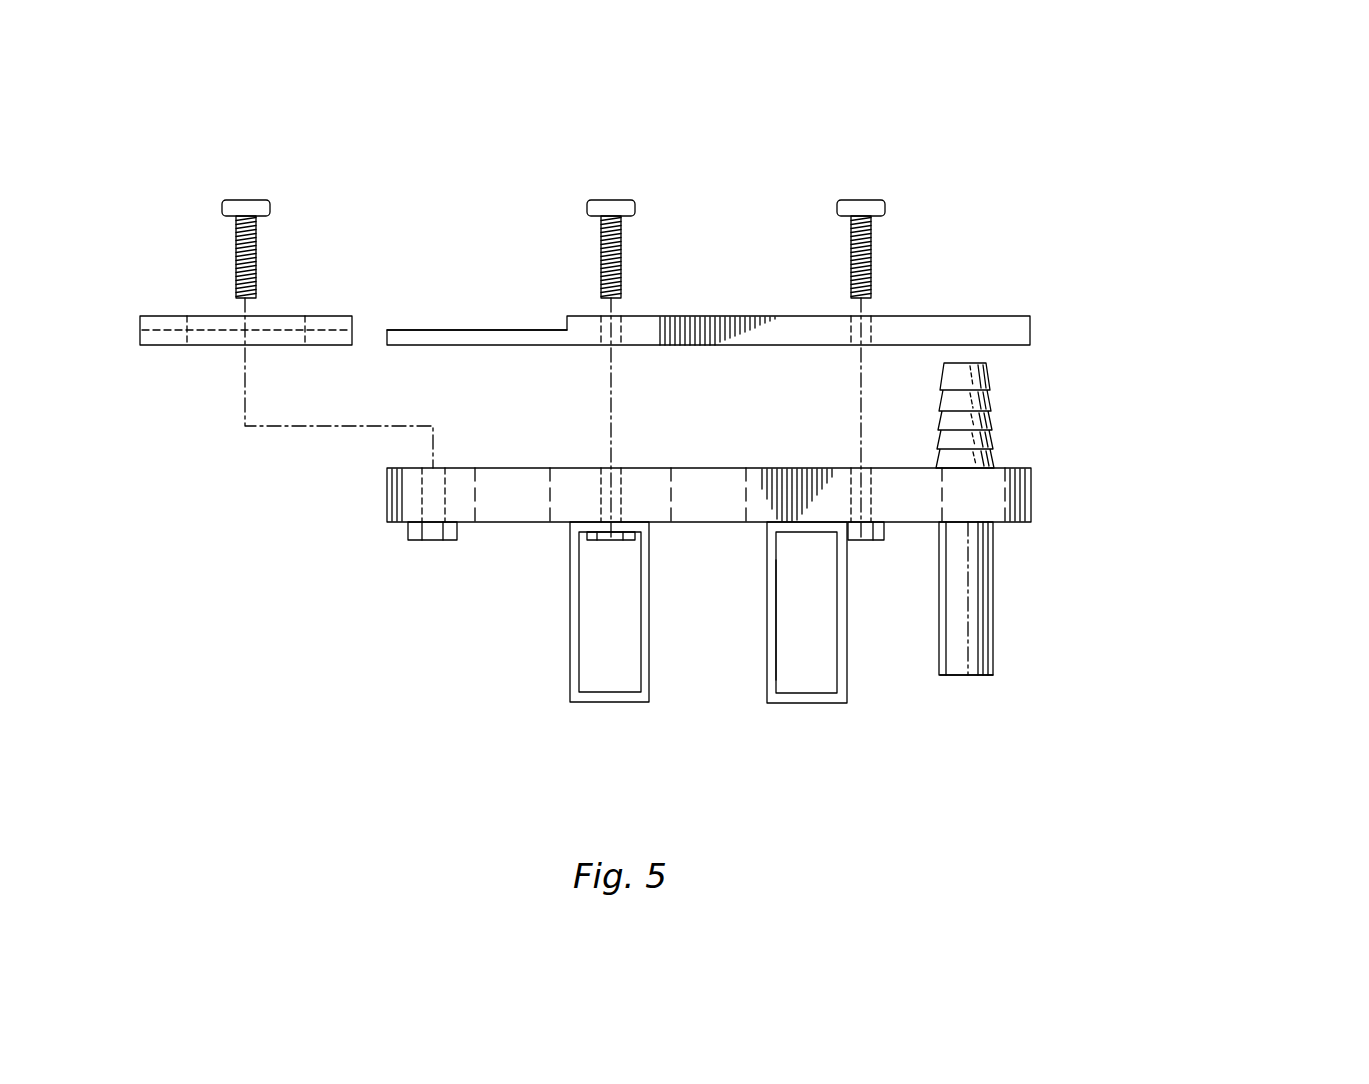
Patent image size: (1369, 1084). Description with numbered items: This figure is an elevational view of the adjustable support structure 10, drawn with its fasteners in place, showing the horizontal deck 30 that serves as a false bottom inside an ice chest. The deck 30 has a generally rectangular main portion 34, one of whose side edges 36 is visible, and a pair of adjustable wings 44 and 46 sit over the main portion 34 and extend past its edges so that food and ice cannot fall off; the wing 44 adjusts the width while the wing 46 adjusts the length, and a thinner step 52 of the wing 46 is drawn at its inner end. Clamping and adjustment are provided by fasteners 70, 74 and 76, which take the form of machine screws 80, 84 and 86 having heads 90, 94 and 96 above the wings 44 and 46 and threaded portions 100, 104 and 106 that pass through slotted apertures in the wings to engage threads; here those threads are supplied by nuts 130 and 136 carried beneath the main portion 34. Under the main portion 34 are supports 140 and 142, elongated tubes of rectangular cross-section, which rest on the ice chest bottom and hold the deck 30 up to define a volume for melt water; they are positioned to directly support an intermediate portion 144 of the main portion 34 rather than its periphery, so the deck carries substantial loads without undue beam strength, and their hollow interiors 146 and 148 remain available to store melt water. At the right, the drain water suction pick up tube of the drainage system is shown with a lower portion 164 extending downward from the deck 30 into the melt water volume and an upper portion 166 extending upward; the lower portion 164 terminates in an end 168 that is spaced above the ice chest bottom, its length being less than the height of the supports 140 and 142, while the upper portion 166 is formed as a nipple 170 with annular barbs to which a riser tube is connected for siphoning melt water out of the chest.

The adjustable support structure 10 is at (1205, 270).
The horizontal deck 30 is at (1162, 414).
The main portion 34 is at (709, 451).
The side edge 36 is at (700, 488).
The adjustable wing 44 is at (228, 346).
The adjustable wing 46 is at (975, 330).
The plate thin portion 52 is at (425, 330).
The fastener 70 is at (250, 228).
The fastener 74 is at (603, 329).
The fastener 76 is at (915, 344).
The machine screw 80 is at (272, 257).
The machine screw 84 is at (590, 273).
The machine screw 86 is at (884, 263).
The head 90 is at (252, 200).
The head 94 is at (584, 205).
The head 96 is at (862, 200).
The threaded portion 100 is at (240, 282).
The threaded portion 104 is at (622, 283).
The threaded portion 106 is at (851, 270).
The nut 130 is at (435, 540).
The nut 136 is at (860, 541).
The support 140 is at (805, 704).
The support 142 is at (570, 645).
The intermediate portion 144 is at (800, 330).
The hollow interior 146 is at (784, 612).
The hollow interior 148 is at (548, 490).
The lower portion 164 is at (995, 600).
The upper portion 166 is at (1000, 388).
The end 168 is at (972, 676).
The nipple 170 is at (1000, 432).